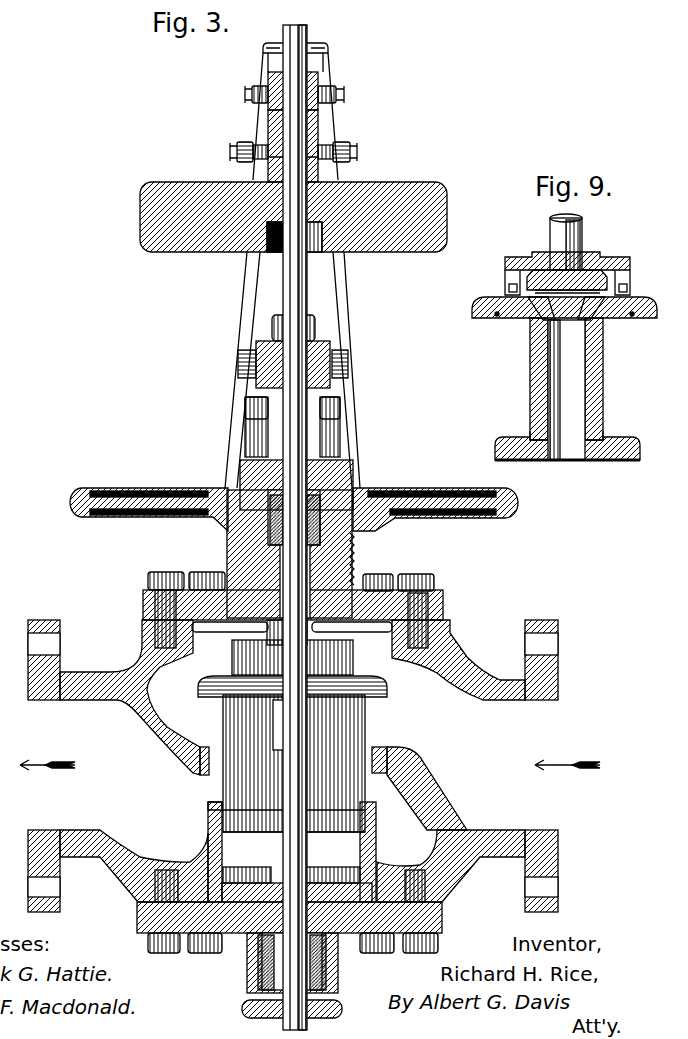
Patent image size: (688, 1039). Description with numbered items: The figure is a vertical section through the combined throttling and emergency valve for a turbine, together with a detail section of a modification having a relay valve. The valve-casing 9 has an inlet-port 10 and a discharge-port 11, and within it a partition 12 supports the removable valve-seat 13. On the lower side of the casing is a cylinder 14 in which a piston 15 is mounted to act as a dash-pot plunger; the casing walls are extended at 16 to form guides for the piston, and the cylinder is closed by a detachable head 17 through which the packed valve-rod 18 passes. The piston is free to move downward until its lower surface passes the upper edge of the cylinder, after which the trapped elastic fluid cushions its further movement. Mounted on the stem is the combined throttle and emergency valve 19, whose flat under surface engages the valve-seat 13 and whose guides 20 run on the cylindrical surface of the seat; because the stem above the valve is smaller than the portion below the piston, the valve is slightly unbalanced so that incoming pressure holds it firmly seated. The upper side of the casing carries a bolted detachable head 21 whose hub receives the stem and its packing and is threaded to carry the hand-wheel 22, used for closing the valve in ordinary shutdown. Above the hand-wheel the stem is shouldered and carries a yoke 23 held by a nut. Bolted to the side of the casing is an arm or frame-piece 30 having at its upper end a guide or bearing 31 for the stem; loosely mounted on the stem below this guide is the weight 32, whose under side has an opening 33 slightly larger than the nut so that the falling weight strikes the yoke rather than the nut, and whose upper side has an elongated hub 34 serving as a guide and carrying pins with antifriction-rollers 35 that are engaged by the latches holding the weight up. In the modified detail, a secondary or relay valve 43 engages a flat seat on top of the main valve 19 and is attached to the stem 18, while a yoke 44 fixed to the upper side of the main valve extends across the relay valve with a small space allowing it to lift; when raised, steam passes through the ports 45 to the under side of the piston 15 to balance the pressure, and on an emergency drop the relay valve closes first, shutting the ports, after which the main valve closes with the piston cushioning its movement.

In FIG. 3, the valve-casing 9 is at (127, 655).
In FIG. 3, the inlet-port 10 is at (550, 801).
In FIG. 3, the discharge-port 11 is at (28, 805).
In FIG. 3, the partition 12 is at (418, 772).
In FIG. 3, the valve-seat 13 is at (375, 747).
In FIG. 3, the cylinder 14 is at (340, 866).
In FIG. 3, the piston 15 is at (240, 820).
In FIG. 9, the piston 15 is at (626, 438).
In FIG. 3, the casing-wall extensions 16 is at (376, 823).
In FIG. 3, the detachable head 17 is at (246, 922).
In FIG. 3, the valve-rod 18 is at (283, 986).
In FIG. 9, the valve-rod 18 is at (585, 232).
In FIG. 3, the combined throttle and emergency valve 19 is at (350, 688).
In FIG. 9, the combined throttle and emergency valve 19 is at (478, 312).
In FIG. 3, the guides 20 is at (366, 713).
In FIG. 3, the detachable head 21 is at (240, 551).
In FIG. 3, the hand-wheel 22 is at (447, 505).
In FIG. 3, the yoke 23 is at (245, 350).
In FIG. 3, the arm or frame-piece 30 is at (250, 294).
In FIG. 3, the guide or bearing 31 is at (318, 75).
In FIG. 3, the weight 32 is at (197, 183).
In FIG. 3, the opening 33 is at (312, 252).
In FIG. 3, the elongated hub 34 is at (268, 126).
In FIG. 3, the antifriction-roller 35 is at (262, 136).
In FIG. 9, the secondary or relay valve 43 is at (606, 279).
In FIG. 9, the yoke 44 is at (618, 257).
In FIG. 9, the ports 45 is at (530, 323).